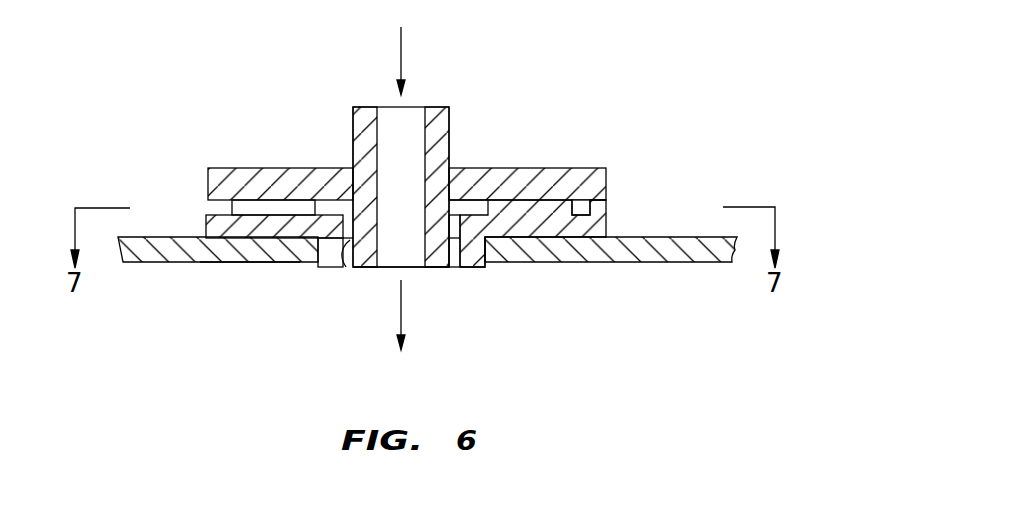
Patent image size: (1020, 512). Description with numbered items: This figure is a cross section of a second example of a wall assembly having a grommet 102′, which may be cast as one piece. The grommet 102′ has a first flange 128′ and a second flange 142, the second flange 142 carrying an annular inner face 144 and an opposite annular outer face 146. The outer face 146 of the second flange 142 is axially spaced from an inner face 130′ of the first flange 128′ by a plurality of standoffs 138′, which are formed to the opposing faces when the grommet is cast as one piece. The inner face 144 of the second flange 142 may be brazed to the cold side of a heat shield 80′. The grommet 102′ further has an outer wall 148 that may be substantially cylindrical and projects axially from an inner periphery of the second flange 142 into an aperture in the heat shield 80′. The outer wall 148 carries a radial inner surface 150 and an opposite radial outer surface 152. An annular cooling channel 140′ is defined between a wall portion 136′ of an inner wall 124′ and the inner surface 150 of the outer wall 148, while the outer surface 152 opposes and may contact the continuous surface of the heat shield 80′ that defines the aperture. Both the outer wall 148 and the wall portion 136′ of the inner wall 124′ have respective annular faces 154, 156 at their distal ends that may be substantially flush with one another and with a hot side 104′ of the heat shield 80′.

The grommet 102′ is at (630, 95).
The inner wall 124′ is at (466, 111).
The first flange 128′ is at (606, 174).
The outer face 146 is at (590, 215).
The inner face 130′ is at (593, 217).
The outer wall 148 is at (480, 267).
The annular cooling channel 140′ is at (455, 267).
The heat shield 80′ is at (683, 262).
The radial outer surface 152 is at (487, 243).
The standoffs 138′ is at (283, 208).
The second flange 142 is at (206, 225).
The hot side 104′ is at (155, 262).
The inner face 144 is at (253, 262).
The annular face 154 is at (325, 267).
The radial inner surface 150 is at (346, 267).
The annular face 156 is at (370, 267).
The wall portion 136′ is at (433, 267).